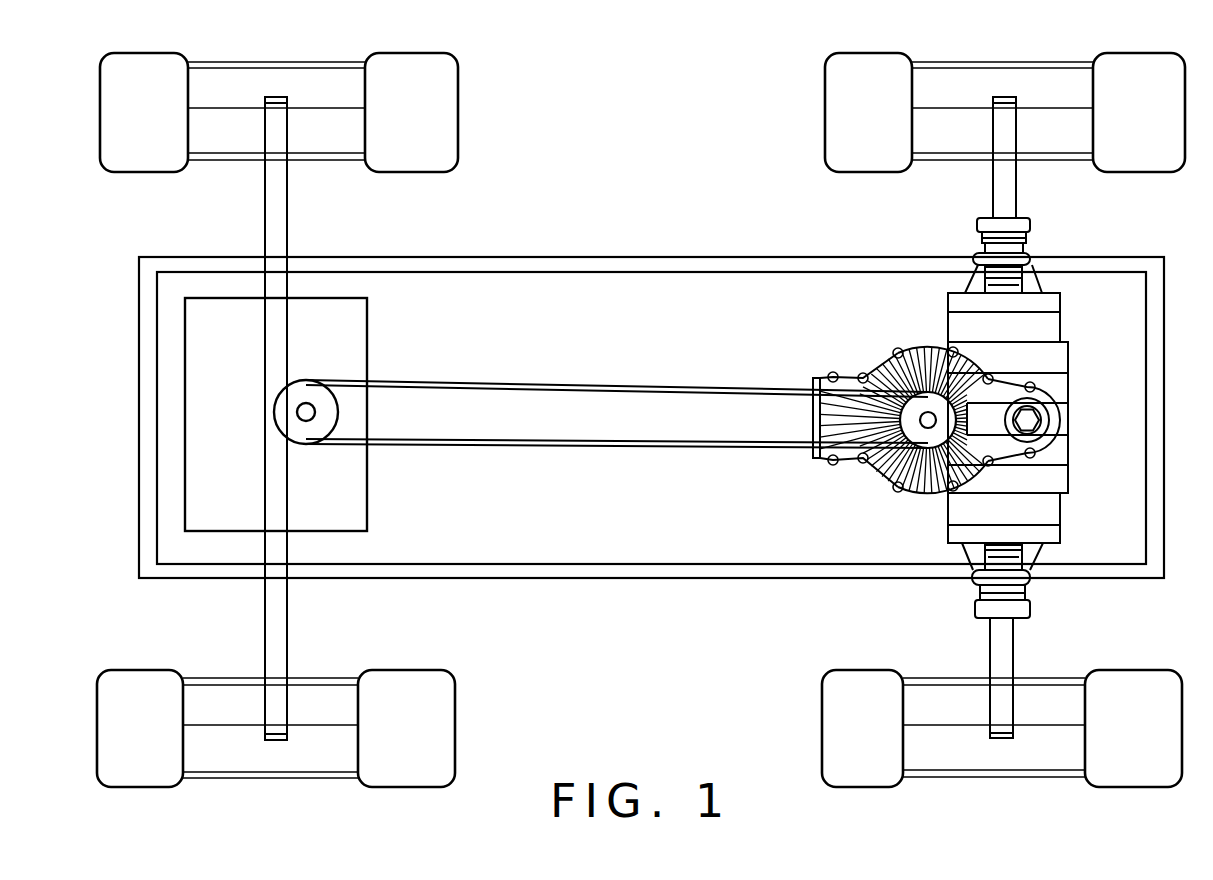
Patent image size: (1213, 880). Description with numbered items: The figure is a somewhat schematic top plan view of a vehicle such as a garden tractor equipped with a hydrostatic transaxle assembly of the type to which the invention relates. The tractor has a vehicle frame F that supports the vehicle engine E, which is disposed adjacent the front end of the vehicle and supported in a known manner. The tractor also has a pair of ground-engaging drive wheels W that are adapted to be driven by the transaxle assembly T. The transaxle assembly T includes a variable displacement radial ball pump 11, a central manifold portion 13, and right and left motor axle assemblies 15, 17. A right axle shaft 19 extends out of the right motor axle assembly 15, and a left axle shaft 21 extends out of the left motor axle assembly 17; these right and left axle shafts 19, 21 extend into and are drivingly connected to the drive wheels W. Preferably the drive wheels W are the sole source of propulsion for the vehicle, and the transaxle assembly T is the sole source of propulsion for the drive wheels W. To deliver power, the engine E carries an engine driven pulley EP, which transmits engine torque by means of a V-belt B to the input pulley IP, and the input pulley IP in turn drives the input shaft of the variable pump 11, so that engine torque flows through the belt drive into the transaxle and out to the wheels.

The drive wheels W is at (837, 115).
The vehicle frame F is at (588, 263).
The vehicle engine E is at (340, 349).
The engine driven pulley EP is at (286, 422).
The V-belt B is at (570, 438).
The transaxle assembly T is at (855, 343).
The input pulley IP is at (884, 482).
The variable displacement radial ball pump 11 is at (922, 494).
The central manifold portion 13 is at (1072, 418).
The right motor axle assembly 15 is at (1071, 337).
The left motor axle assembly 17 is at (1067, 514).
The right axle shaft 19 is at (1003, 175).
The left axle shaft 21 is at (1005, 632).